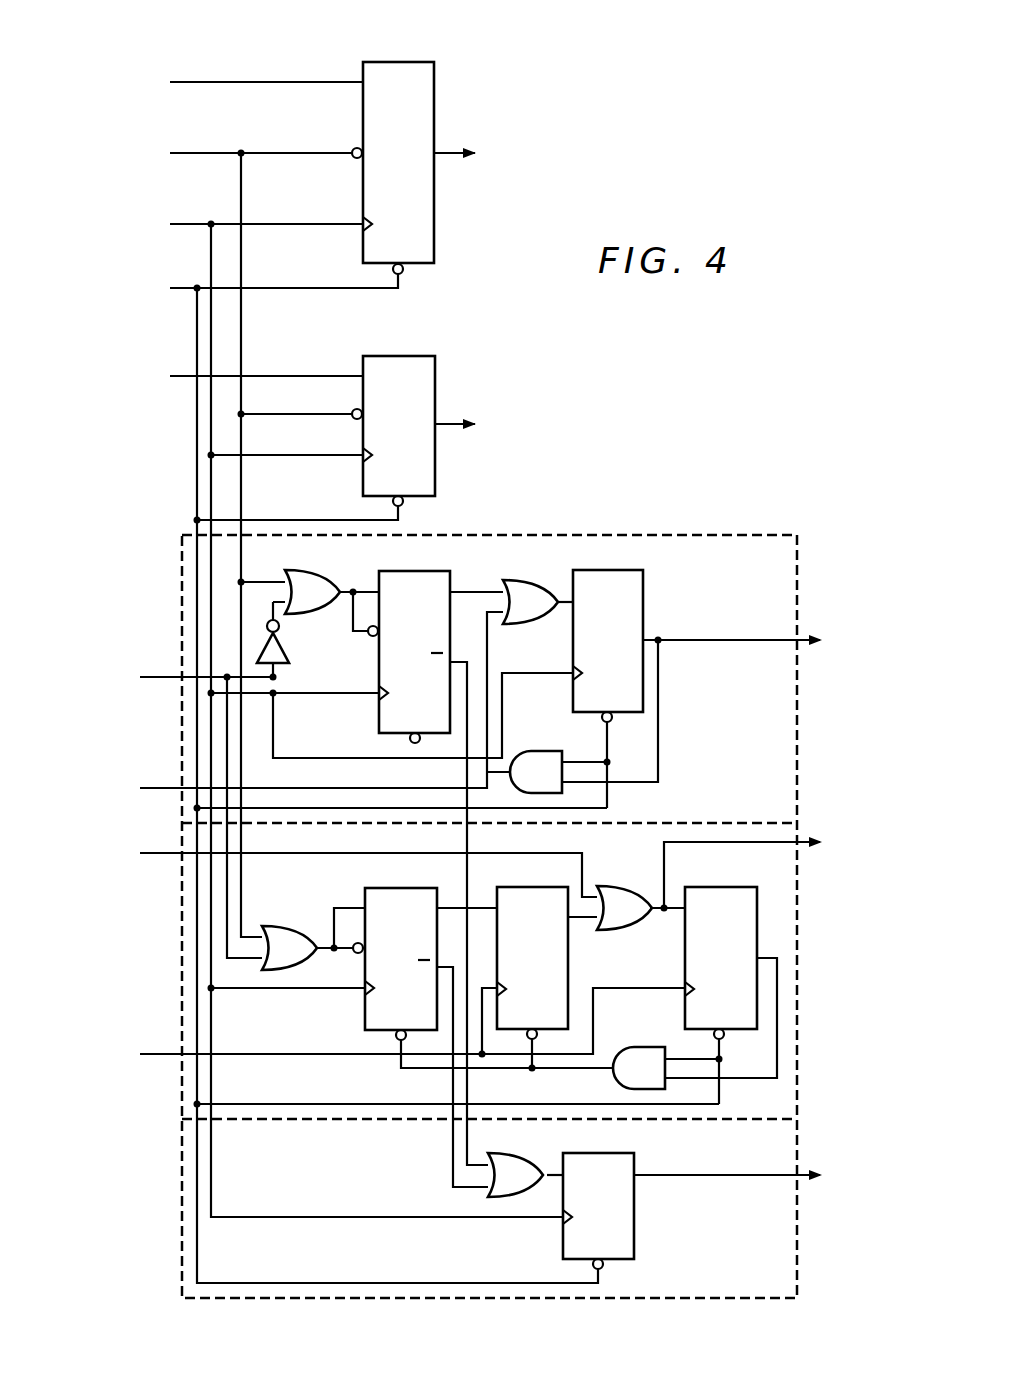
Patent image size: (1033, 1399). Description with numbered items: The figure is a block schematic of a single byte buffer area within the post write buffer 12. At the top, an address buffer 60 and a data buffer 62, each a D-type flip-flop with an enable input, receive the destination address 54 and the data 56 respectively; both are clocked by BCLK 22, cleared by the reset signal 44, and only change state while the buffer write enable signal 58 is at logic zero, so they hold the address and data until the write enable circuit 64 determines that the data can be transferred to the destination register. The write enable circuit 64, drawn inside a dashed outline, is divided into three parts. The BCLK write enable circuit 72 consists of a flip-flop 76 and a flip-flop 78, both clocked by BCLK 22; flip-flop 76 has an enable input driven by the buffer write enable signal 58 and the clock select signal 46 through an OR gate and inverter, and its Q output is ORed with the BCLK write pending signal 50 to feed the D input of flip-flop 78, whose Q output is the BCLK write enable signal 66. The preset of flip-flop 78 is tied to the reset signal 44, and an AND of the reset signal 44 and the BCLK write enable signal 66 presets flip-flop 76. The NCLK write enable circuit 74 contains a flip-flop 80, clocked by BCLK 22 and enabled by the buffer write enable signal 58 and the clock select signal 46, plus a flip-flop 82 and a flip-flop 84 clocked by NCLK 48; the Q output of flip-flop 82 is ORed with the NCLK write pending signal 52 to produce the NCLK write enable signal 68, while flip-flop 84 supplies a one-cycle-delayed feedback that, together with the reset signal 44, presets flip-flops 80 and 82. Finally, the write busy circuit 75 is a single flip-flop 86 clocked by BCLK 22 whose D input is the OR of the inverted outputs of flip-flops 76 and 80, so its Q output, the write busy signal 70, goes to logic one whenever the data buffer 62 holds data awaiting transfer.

The post write buffer 12 is at (560, 101).
The BCLK 22 is at (190, 227).
The reset signal 44 is at (190, 291).
The clock select signal 46 is at (168, 676).
The NCLK 48 is at (160, 1058).
The BCLK write pending signal 50 is at (168, 787).
The NCLK write pending signal 52 is at (166, 857).
The destination address 54 is at (222, 81).
The data 56 is at (190, 379).
The buffer write enable signal 58 is at (222, 152).
The address buffer 60 is at (434, 106).
The data buffer 62 is at (435, 382).
The write enable circuit 64 is at (626, 514).
The BCLK write enable signal 66 is at (660, 638).
The NCLK write enable signal 68 is at (664, 872).
The write busy signal 70 is at (662, 1180).
The BCLK write enable circuit 72 is at (760, 808).
The NCLK write enable circuit 74 is at (760, 1110).
The write busy circuit 75 is at (760, 1285).
The flip-flop 76 is at (379, 712).
The flip-flop 78 is at (573, 690).
The flip-flop 80 is at (365, 1008).
The flip-flop 82 is at (568, 964).
The flip-flop 84 is at (685, 1008).
The flip-flop 86 is at (563, 1242).